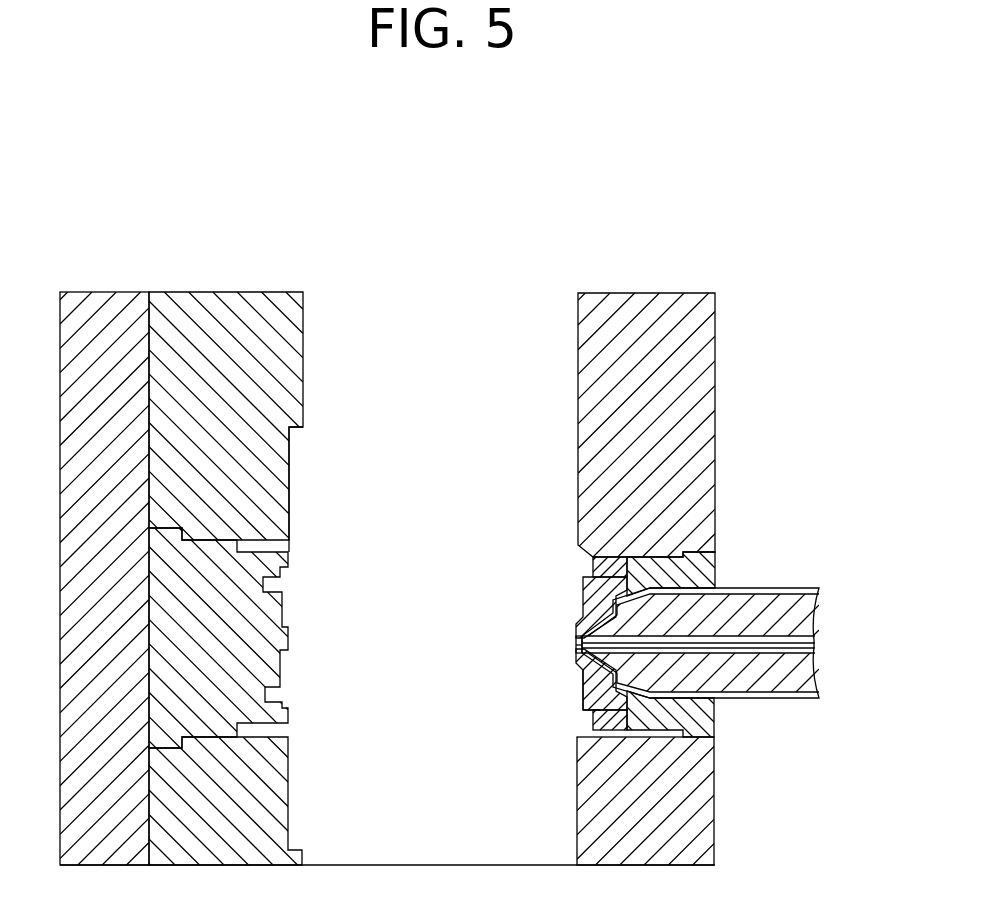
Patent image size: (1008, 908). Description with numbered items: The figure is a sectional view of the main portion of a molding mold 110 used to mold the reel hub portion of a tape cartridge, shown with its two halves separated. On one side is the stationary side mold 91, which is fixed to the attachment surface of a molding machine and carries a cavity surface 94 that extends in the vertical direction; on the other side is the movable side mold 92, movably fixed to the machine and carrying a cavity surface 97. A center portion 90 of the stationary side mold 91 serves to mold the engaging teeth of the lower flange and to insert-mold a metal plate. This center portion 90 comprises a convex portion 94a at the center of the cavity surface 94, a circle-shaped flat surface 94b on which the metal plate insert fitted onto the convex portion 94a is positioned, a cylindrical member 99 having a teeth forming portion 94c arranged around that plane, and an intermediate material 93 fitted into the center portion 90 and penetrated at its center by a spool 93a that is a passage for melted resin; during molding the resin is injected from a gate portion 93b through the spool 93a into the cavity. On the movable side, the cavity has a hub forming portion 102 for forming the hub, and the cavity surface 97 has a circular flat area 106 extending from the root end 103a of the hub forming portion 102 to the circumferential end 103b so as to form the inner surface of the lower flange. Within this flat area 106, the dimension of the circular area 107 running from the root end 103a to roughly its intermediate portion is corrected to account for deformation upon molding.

The molding mold 110 is at (461, 248).
The movable side mold 92 is at (209, 282).
The stationary side mold 91 is at (651, 283).
The circumferential end 103b is at (300, 436).
The flat area 106 is at (304, 463).
The circular area 107 is at (291, 481).
The root end 103a is at (297, 540).
The cavity surface 97 is at (296, 610).
The hub forming portion 102 is at (280, 730).
The cylindrical member 99 is at (606, 557).
The cavity surface 94 is at (565, 540).
The center portion 90 is at (707, 574).
The intermediate material 93 is at (798, 601).
The spool 93a is at (812, 641).
The gate portion 93b is at (580, 643).
The convex portion 94a is at (581, 664).
The flat surface 94b is at (582, 697).
The teeth forming portion 94c is at (583, 720).